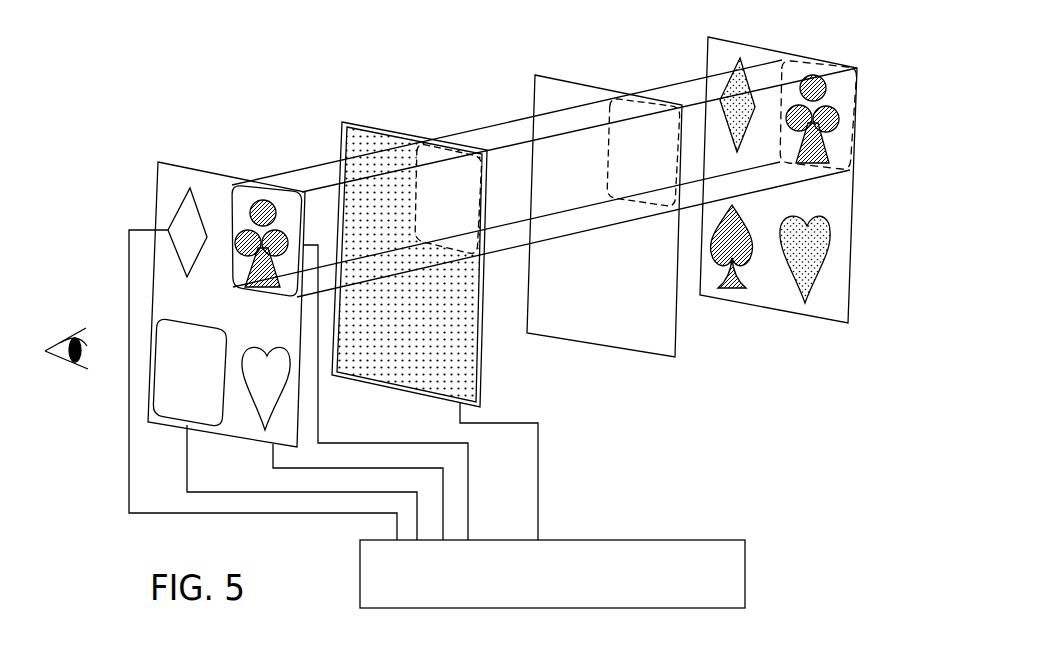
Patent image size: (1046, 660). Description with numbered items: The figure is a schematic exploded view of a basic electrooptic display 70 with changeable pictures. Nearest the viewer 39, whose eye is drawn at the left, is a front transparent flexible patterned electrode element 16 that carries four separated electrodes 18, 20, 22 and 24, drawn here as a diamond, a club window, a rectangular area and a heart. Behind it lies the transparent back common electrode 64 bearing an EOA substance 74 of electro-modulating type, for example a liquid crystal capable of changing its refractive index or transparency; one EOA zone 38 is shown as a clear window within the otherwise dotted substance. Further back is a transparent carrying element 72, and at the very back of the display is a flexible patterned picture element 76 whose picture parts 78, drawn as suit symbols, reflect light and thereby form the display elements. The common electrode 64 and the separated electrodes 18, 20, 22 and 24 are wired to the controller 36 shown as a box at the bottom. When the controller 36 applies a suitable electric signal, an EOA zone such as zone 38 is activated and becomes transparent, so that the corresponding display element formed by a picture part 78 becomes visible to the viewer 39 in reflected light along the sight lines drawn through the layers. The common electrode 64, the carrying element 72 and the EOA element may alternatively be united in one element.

The display 70 is at (264, 81).
The front transparent flexible patterned electrode element 16 is at (218, 174).
The separated electrode 18 is at (182, 217).
The separated electrode 20 is at (256, 299).
The separated electrode 22 is at (204, 388).
The separated electrode 24 is at (282, 393).
The viewer 39 is at (67, 356).
The EOA substance 74 is at (373, 135).
The transparent back common electrode 64 is at (408, 250).
The EOA zone 38 is at (455, 224).
The transparent carrying element 72 is at (597, 88).
The flexible patterned picture element 76 is at (782, 50).
The picture parts 78 is at (832, 138).
The controller 36 is at (747, 574).